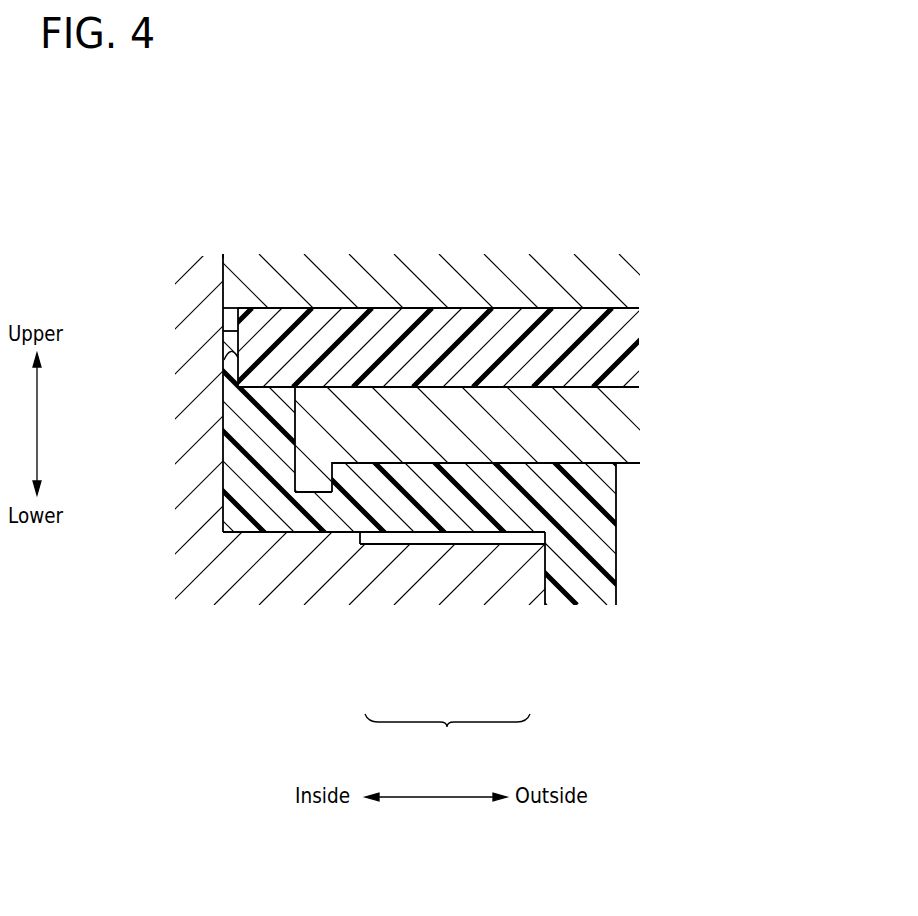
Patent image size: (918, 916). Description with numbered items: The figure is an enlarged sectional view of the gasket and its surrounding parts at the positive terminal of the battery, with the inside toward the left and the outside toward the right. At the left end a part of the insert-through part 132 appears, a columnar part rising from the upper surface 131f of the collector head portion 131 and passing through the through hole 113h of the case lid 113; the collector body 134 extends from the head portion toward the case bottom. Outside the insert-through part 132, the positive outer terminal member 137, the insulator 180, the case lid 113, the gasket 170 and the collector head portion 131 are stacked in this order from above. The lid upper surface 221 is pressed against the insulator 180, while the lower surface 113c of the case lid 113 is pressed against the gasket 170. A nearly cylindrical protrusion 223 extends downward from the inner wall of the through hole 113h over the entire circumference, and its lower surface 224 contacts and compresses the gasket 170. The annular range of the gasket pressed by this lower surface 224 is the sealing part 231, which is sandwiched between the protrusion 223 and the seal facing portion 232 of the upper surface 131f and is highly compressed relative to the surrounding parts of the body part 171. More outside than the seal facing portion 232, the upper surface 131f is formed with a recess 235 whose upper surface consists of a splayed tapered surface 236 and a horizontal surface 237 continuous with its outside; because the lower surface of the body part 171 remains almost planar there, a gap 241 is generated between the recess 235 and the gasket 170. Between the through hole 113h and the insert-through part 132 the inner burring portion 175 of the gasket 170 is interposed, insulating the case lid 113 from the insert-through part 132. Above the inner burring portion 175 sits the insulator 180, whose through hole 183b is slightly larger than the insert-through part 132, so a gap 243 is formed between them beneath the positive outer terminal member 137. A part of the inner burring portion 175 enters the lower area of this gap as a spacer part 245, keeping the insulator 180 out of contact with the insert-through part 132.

The collector body 134 is at (182, 256).
The insert-through part 132 is at (183, 387).
The positive outer terminal member 137 is at (600, 285).
The through hole 183b is at (223, 331).
The gap 243 is at (228, 308).
The spacer part 245 is at (223, 358).
The insulator 180 is at (613, 340).
The lid upper surface 221 is at (550, 387).
The case lid 113 is at (583, 430).
The through hole 113h is at (296, 440).
The lower surface 113c is at (547, 463).
The protrusion 223 is at (310, 470).
The lower surface 224 is at (310, 495).
The inner burring portion 175 is at (253, 413).
The gasket 170 is at (590, 540).
The body part 171 is at (467, 510).
The gap 241 is at (493, 537).
The collector head portion 131 is at (415, 575).
The upper surface 131f is at (228, 533).
The sealing part 231 is at (290, 533).
The seal facing portion 232 is at (352, 533).
The tapered surface 236 is at (363, 544).
The horizontal surface 237 is at (453, 538).
The recess 235 is at (447, 737).